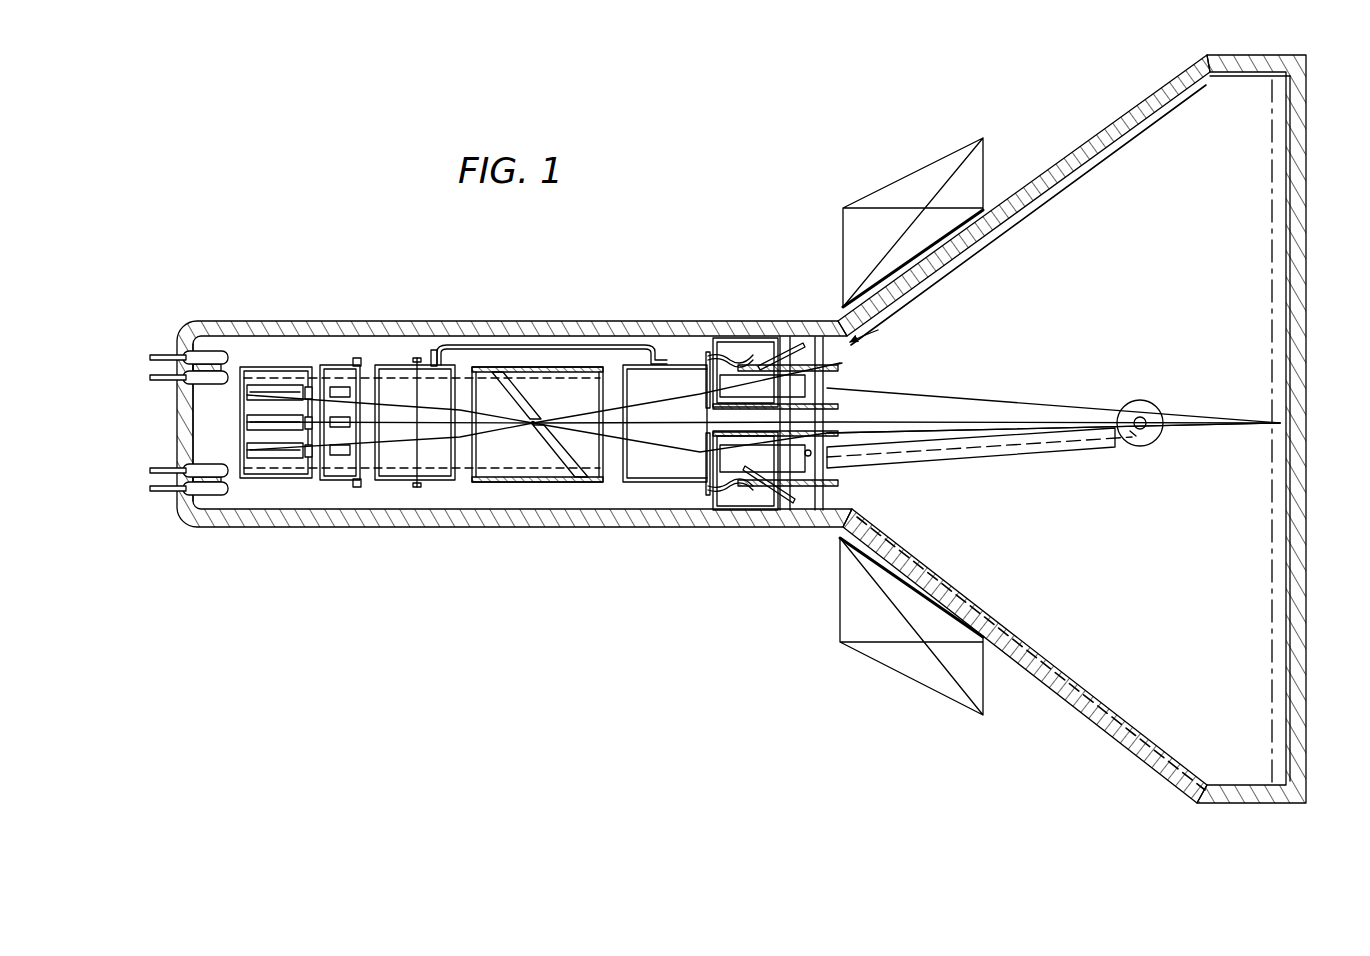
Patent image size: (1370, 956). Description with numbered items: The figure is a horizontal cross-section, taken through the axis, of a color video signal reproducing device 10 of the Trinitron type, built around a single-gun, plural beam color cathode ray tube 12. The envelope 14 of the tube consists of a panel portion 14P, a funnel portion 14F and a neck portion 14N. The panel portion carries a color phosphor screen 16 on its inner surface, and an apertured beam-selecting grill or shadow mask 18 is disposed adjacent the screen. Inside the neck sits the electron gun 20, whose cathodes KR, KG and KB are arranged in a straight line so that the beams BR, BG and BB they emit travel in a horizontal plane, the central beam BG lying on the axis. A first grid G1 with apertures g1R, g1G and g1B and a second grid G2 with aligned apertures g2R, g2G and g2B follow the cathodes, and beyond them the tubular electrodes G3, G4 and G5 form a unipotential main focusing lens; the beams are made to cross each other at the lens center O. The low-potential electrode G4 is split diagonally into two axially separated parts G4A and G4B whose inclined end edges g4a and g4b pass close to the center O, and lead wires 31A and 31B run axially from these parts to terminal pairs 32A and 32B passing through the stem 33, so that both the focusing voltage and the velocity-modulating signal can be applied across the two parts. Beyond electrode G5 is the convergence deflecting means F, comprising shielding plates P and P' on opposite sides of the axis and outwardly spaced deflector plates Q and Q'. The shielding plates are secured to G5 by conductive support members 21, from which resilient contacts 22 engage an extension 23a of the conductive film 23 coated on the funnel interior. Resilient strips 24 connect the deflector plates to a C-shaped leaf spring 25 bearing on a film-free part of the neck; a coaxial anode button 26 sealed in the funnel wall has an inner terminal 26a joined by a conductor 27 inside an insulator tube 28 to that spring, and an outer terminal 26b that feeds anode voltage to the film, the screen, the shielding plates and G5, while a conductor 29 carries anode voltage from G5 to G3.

The color video signal reproducing device 10 is at (721, 429).
The color cathode ray tube 12 is at (468, 458).
The envelope 14 is at (721, 429).
The neck portion 14N is at (468, 457).
The funnel portion 14F is at (970, 429).
The panel portion 14P is at (1277, 429).
The color phosphor screen 16 is at (1278, 548).
The beam-selecting grill or shadow mask 18 is at (1268, 600).
The electron gun 20 is at (432, 350).
The conductive support members 21 is at (718, 380).
The conductive resilient contacts 22 is at (733, 348).
The conductive film 23 is at (1052, 710).
The extension of conductive film 23a is at (752, 338).
The resilient conductive strips 24 is at (800, 343).
The C-shaped conductive leaf spring 25 is at (818, 505).
The coaxial anode button 26 is at (1131, 428).
The inner terminal 26a is at (1138, 447).
The outer terminal 26b is at (1128, 405).
The conductor 27 is at (1053, 446).
The insulator tube 28 is at (958, 461).
The conductor 29 is at (531, 343).
The lead wire 31A is at (360, 486).
The lead wire 31B is at (362, 352).
The terminal pair 32A is at (152, 470).
The terminal pair 32B is at (150, 377).
The stem 33 is at (182, 420).
The electron beam convergence deflecting means F is at (872, 327).
The deflector plate Q is at (875, 350).
The shielding plate P is at (1053, 393).
The shielding plate P' is at (979, 438).
The deflector plate Q' is at (1053, 463).
The center of main focusing lens O is at (536, 421).
The cathode KR is at (257, 393).
The cathode KG is at (257, 422).
The cathode KB is at (257, 450).
The first grid G1 is at (265, 391).
The second grid G2 is at (368, 415).
The tubular electrode G3 is at (763, 436).
The tubular electrode G4 is at (763, 469).
The electrode part G4A is at (480, 484).
The electrode part G4B is at (595, 484).
The tubular electrode G5 is at (666, 481).
The aperture g1R is at (313, 427).
The aperture g1G is at (300, 380).
The aperture g1B is at (313, 457).
The aperture g2R is at (345, 400).
The aperture g2G is at (351, 411).
The aperture g2B is at (350, 439).
The end edge g4a is at (546, 438).
The end edge g4b is at (522, 396).
The electron beam BR is at (455, 401).
The electron beam BG is at (483, 418).
The electron beam BB is at (502, 427).